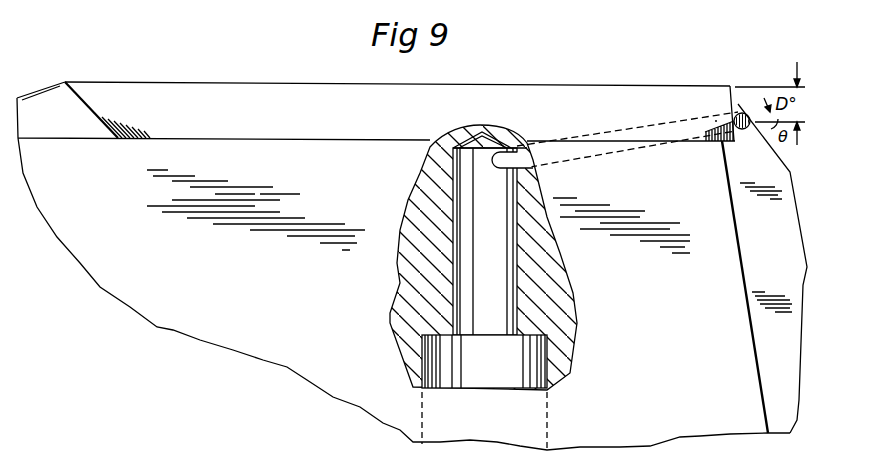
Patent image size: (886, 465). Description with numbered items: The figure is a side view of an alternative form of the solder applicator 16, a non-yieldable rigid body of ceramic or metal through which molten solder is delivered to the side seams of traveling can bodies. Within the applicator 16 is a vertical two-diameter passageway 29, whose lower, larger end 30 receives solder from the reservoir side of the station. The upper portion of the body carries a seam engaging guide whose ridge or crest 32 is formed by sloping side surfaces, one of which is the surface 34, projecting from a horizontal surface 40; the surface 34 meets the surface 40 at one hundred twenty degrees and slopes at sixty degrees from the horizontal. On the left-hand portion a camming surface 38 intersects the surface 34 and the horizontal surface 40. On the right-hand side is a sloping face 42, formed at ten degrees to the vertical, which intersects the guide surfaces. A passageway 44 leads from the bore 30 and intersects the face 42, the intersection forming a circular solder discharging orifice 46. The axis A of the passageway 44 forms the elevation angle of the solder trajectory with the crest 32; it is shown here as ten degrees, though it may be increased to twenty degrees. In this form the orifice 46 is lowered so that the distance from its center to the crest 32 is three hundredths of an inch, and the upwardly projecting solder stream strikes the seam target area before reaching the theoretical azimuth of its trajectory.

The solder applicator 16 is at (288, 289).
The vertical two diameter passageway 29 is at (510, 192).
The lower or larger end of passageway 30 is at (547, 362).
The ridge or crest 32 is at (283, 82).
The sloping side surface 34 is at (209, 119).
The camming surface 38 is at (32, 124).
The horizontal surface 40 is at (168, 138).
The sloping surface or face 42 is at (749, 244).
The passageway 44 is at (621, 130).
The solder discharging orifice 46 is at (741, 112).
The axis of passageway A is at (716, 121).